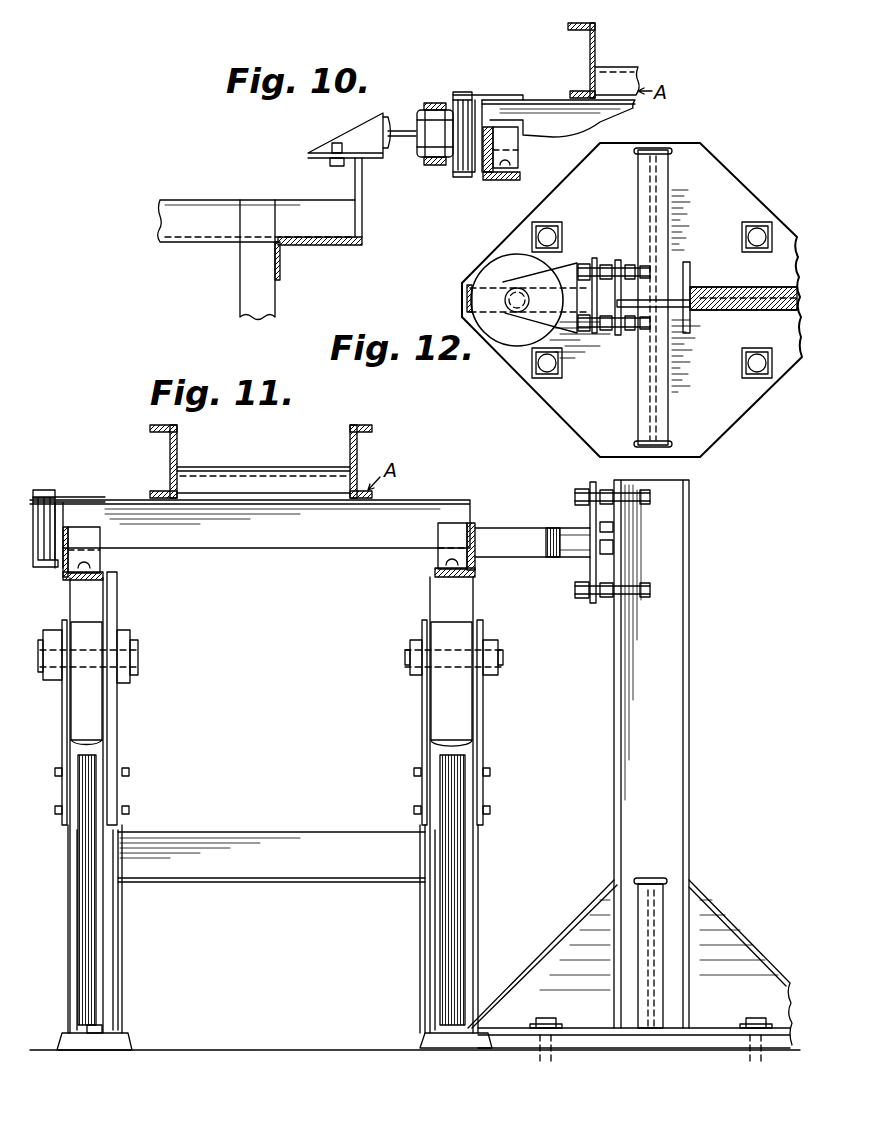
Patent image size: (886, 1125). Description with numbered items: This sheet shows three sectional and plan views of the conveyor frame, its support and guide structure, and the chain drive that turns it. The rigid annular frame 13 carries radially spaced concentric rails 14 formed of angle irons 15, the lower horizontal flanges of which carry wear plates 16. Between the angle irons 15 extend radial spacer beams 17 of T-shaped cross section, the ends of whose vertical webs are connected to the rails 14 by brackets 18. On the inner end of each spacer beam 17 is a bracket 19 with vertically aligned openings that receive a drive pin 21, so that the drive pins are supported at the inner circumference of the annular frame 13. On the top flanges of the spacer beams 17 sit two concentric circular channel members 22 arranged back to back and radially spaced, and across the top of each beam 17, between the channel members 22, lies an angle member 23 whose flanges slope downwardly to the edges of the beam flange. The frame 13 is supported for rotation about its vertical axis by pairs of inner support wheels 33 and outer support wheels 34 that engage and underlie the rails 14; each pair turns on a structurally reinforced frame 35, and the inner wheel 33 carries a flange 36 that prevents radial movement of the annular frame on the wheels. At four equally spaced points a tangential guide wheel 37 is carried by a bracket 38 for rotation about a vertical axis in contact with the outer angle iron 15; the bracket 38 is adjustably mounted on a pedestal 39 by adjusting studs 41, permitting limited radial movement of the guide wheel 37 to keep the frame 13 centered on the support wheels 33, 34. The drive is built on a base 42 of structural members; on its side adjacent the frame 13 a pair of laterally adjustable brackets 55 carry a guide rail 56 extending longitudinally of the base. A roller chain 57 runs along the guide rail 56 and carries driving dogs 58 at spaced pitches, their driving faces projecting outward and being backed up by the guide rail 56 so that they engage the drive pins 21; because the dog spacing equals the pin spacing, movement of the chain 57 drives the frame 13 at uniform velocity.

In FIG. 10, the annular frame 13 is at (559, 97).
In FIG. 11, the annular frame 13 is at (419, 497).
In FIG. 10, the rails 14 is at (482, 177).
In FIG. 11, the rails 14 is at (60, 582).
In FIG. 10, the angle irons 15 is at (495, 152).
In FIG. 11, the angle irons 15 is at (70, 527).
In FIG. 10, the wear plates 16 is at (507, 183).
In FIG. 11, the wear plates 16 is at (88, 583).
In FIG. 10, the spacer beams 17 is at (533, 112).
In FIG. 11, the spacer beams 17 is at (440, 510).
In FIG. 10, the brackets 18 is at (513, 145).
In FIG. 11, the brackets 18 is at (100, 557).
In FIG. 10, the bracket 19 is at (502, 95).
In FIG. 11, the bracket 19 is at (70, 495).
In FIG. 10, the drive pin 21 is at (470, 92).
In FIG. 11, the drive pin 21 is at (48, 490).
In FIG. 10, the channel members 22 is at (597, 46).
In FIG. 11, the channel members 22 is at (177, 452).
In FIG. 10, the angle member 23 is at (638, 65).
In FIG. 11, the angle member 23 is at (268, 467).
In FIG. 11, the inner support wheels 33 is at (95, 622).
In FIG. 11, the outer support wheels 34 is at (440, 602).
In FIG. 11, the structurally reinforced frame 35 is at (268, 832).
In FIG. 11, the flange 36 is at (130, 698).
In FIG. 11, the tangential guide wheels 37 is at (490, 530).
In FIG. 12, the tangential guide wheels 37 is at (520, 350).
In FIG. 11, the brackets 38 is at (550, 562).
In FIG. 12, the brackets 38 is at (593, 340).
In FIG. 11, the pedestals 39 is at (690, 674).
In FIG. 12, the pedestals 39 is at (690, 264).
In FIG. 11, the adjusting studs 41 is at (642, 580).
In FIG. 12, the adjusting studs 41 is at (636, 257).
In FIG. 10, the base 42 is at (278, 299).
In FIG. 10, the laterally adjustable brackets 55 is at (363, 128).
In FIG. 10, the guide rail 56 is at (398, 140).
In FIG. 10, the roller chain 57 is at (424, 112).
In FIG. 10, the driving dogs 58 is at (453, 168).